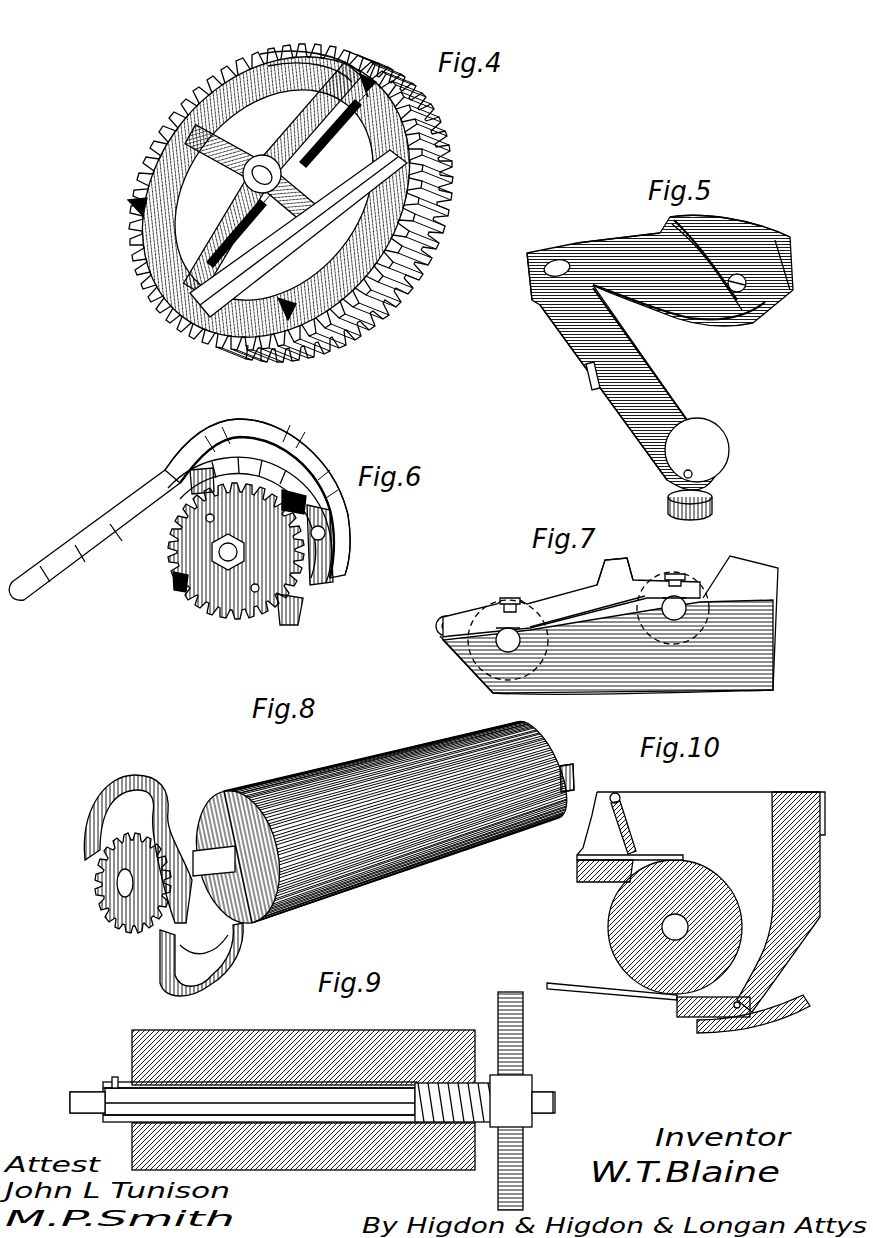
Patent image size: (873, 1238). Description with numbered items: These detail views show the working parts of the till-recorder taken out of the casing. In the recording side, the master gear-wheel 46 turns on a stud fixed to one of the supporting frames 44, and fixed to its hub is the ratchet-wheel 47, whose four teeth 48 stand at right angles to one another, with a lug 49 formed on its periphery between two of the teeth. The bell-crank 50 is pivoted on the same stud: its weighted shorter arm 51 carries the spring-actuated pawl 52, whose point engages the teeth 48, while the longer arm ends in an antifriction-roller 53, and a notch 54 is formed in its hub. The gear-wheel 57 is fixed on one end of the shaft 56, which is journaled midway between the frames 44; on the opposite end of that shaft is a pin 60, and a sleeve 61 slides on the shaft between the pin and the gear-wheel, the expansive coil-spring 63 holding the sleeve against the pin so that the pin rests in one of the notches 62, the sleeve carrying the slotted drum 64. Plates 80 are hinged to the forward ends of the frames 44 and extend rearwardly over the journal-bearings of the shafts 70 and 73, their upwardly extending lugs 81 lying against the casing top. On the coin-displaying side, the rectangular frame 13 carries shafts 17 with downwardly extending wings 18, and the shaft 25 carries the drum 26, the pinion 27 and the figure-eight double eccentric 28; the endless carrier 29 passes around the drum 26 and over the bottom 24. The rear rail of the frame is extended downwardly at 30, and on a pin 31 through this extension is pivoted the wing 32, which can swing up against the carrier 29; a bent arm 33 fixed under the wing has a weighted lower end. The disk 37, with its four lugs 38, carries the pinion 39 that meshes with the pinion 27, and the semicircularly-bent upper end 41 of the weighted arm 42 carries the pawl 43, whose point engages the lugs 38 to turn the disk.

In FIG. 10, the rectangular frame 13 is at (818, 790).
In FIG. 10, the shafts 17 is at (620, 797).
In FIG. 10, the wings 18 is at (634, 824).
In FIG. 10, the bottom 24 is at (577, 876).
In FIG. 8, the shaft 25 is at (200, 840).
In FIG. 10, the shaft 25 is at (668, 924).
In FIG. 8, the drum 26 is at (268, 786).
In FIG. 10, the drum 26 is at (618, 951).
In FIG. 8, the pinion 27 is at (96, 897).
In FIG. 8, the double eccentric 28 is at (112, 790).
In FIG. 10, the endless carrier 29 is at (586, 990).
In FIG. 10, the extended end 30 is at (778, 958).
In FIG. 10, the pin 31 is at (736, 1010).
In FIG. 10, the wing 32 is at (688, 1020).
In FIG. 10, the bent arm 33 is at (768, 1024).
In FIG. 6, the disk 37 is at (285, 488).
In FIG. 6, the lugs or projections 38 is at (308, 500).
In FIG. 6, the pinion 39 is at (232, 600).
In FIG. 6, the semicircularly-bent upper end 41 is at (292, 445).
In FIG. 6, the arm 42 is at (80, 562).
In FIG. 6, the pawl 43 is at (334, 570).
In FIG. 7, the frames 44 is at (609, 625).
In FIG. 4, the master gear-wheel 46 is at (425, 212).
In FIG. 4, the ratchet-wheel 47 is at (292, 254).
In FIG. 4, the teeth 48 is at (262, 52).
In FIG. 4, the lug 49 is at (372, 68).
In FIG. 5, the bell-crank 50 is at (596, 252).
In FIG. 5, the shorter arm 51 is at (636, 250).
In FIG. 5, the spring-actuated pawl 52 is at (718, 236).
In FIG. 5, the antifriction-roller 53 is at (713, 510).
In FIG. 5, the notch 54 is at (532, 262).
In FIG. 9, the shaft 56 is at (282, 1094).
In FIG. 9, the gear-wheel 57 is at (524, 1058).
In FIG. 9, the pin 60 is at (115, 1076).
In FIG. 9, the sleeve 61 is at (222, 1084).
In FIG. 9, the notches 62 is at (98, 1090).
In FIG. 9, the expansive coil-spring 63 is at (438, 1084).
In FIG. 9, the drum 64 is at (384, 1036).
In FIG. 7, the shaft 70 is at (512, 620).
In FIG. 7, the shaft 73 is at (688, 610).
In FIG. 7, the plates 80 is at (571, 597).
In FIG. 7, the lugs 81 is at (612, 570).